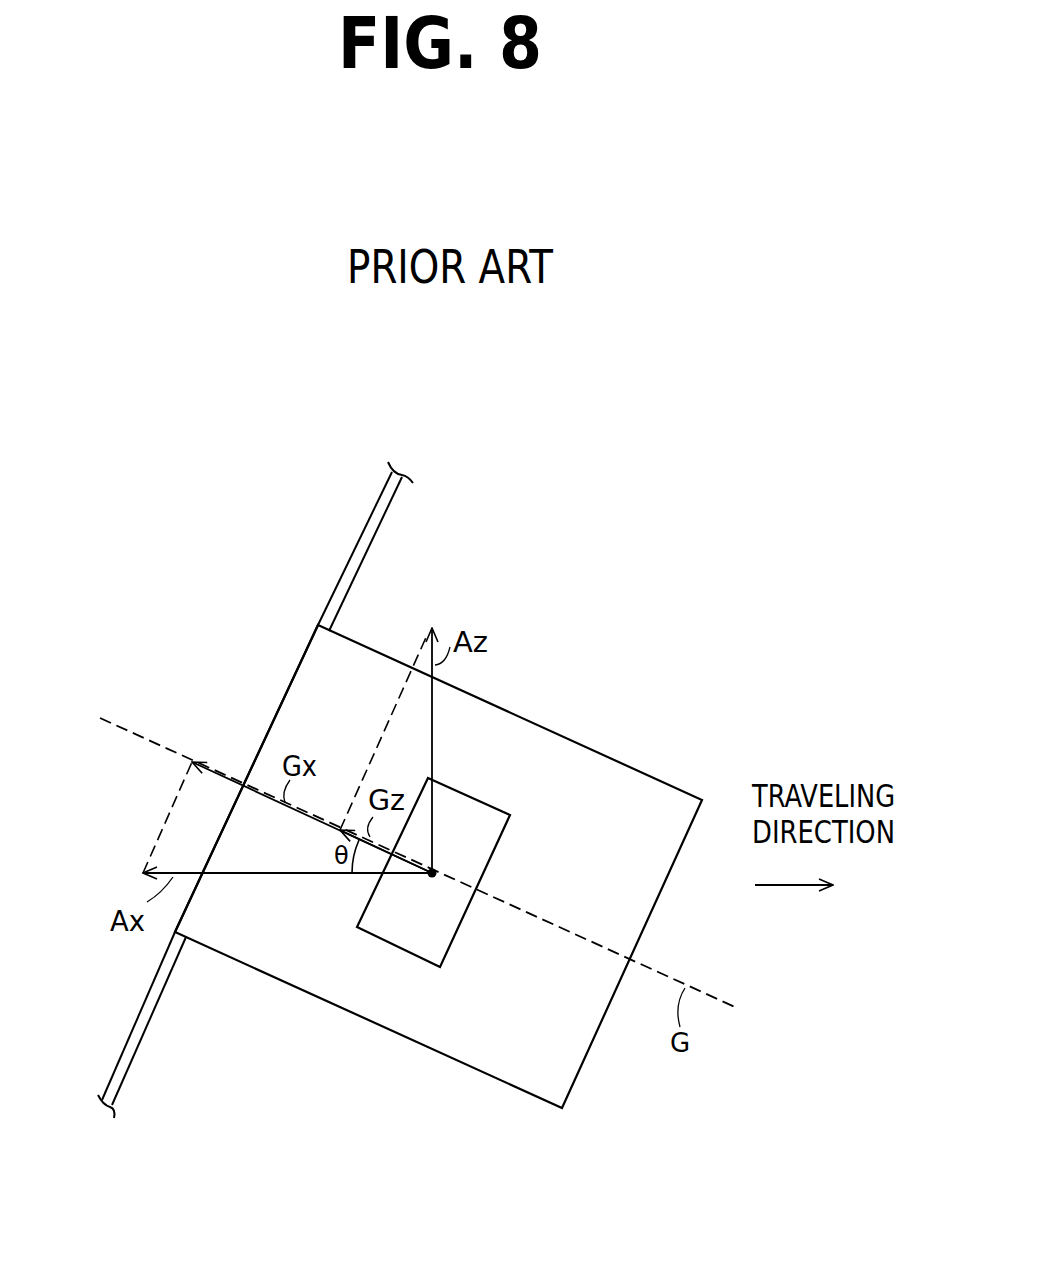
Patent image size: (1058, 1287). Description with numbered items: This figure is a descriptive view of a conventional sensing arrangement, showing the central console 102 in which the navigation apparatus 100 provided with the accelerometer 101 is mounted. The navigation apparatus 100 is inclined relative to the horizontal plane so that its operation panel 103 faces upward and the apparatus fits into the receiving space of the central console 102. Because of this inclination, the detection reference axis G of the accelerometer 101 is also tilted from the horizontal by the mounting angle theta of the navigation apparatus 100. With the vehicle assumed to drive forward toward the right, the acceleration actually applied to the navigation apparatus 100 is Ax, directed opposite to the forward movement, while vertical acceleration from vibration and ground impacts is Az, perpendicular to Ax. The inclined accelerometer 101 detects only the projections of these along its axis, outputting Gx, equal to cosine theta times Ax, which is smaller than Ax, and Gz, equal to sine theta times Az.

The navigation apparatus 100 is at (623, 760).
The accelerometer 101 is at (478, 797).
The central console 102 is at (373, 513).
The operation panel 103 is at (262, 740).